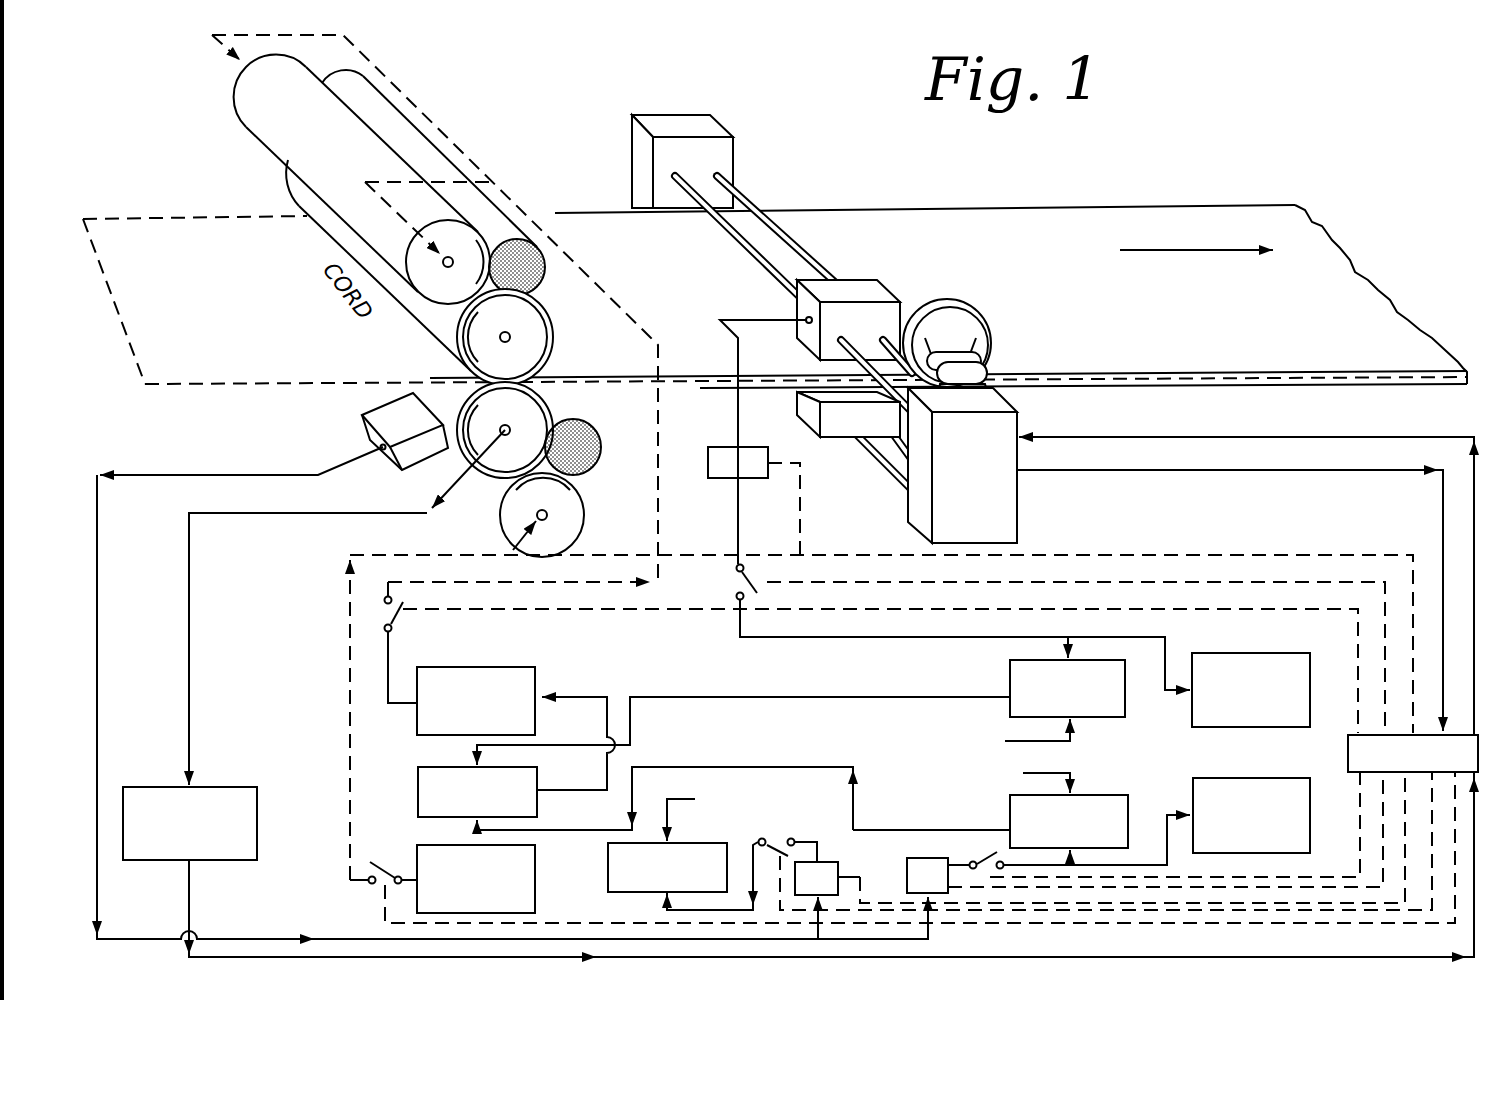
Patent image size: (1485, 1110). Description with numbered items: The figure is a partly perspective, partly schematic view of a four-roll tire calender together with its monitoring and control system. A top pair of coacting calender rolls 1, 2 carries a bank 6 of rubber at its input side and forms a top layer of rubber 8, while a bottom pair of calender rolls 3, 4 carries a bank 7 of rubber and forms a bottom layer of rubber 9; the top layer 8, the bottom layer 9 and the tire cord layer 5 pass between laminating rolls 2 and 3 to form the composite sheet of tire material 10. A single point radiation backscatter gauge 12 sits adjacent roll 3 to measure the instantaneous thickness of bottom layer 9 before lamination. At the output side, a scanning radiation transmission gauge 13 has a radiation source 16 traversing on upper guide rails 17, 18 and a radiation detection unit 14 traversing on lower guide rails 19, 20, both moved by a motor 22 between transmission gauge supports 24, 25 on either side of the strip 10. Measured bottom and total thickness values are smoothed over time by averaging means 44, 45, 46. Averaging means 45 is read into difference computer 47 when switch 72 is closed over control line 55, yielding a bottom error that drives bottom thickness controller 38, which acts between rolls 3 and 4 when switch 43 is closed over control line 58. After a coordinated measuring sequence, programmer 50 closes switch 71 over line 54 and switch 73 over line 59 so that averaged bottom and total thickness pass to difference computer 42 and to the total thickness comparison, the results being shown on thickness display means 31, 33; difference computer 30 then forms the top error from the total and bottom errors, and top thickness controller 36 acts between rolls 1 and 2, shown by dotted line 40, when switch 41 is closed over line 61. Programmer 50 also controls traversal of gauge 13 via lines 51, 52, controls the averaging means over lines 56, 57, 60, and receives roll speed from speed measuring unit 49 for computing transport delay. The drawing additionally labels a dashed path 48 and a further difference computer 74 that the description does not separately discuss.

The calender roll 1 is at (362, 179).
The calender roll 2 is at (505, 337).
The calender roll 3 is at (505, 430).
The calender roll 4 is at (542, 515).
The tire cord layer 5 is at (158, 228).
The bank of rubber 6 is at (540, 284).
The bank of rubber 7 is at (598, 430).
The top layer of rubber 8 is at (457, 340).
The bottom layer of rubber 9 is at (483, 474).
The composite sheet of tire material 10 is at (1097, 212).
The single point radiation backscatter gauge 12 is at (362, 413).
The scanning radiation transmission gauge 13 is at (903, 275).
The radiation detection unit 14 is at (797, 405).
The radiation source 16 is at (800, 312).
The upper guide rail 17 is at (736, 243).
The upper guide rail 18 is at (790, 240).
The lower guide rail 19 is at (893, 475).
The lower guide rail 20 is at (893, 445).
The motor 22 is at (978, 338).
The transmission gauge support 24 is at (710, 127).
The transmission gauge support 25 is at (1010, 424).
The difference computer 30 is at (418, 764).
The thickness display means 31 is at (1272, 655).
The thickness display means 33 is at (1278, 778).
The top thickness controller 36 is at (490, 667).
The bottom thickness controller 38 is at (418, 852).
The dotted line 40 is at (650, 336).
The switch 41 is at (384, 612).
The difference computer 42 is at (1010, 805).
The switch 43 is at (372, 884).
The averaging means 44 is at (907, 870).
The averaging means 45 is at (838, 870).
The averaging means 46 is at (712, 448).
The difference computer 47 is at (608, 853).
The control line 48 is at (350, 697).
The speed measuring unit 49 is at (155, 788).
The programmer 50 is at (1355, 735).
The line 51 is at (1148, 477).
The line 52 is at (1228, 440).
The control line 54 is at (1033, 878).
The control line 55 is at (1085, 887).
The line 56 is at (1152, 903).
The line 57 is at (1208, 910).
The control line 58 is at (1278, 922).
The line 59 is at (1137, 580).
The line 60 is at (1193, 555).
The line 61 is at (1267, 608).
The switch 71 is at (985, 856).
The switch 72 is at (788, 837).
The switch 73 is at (946, 628).
The difference computer 74 is at (1010, 672).